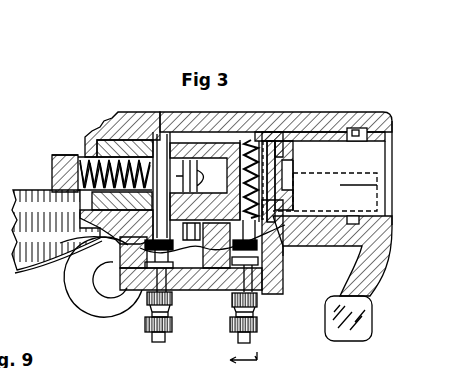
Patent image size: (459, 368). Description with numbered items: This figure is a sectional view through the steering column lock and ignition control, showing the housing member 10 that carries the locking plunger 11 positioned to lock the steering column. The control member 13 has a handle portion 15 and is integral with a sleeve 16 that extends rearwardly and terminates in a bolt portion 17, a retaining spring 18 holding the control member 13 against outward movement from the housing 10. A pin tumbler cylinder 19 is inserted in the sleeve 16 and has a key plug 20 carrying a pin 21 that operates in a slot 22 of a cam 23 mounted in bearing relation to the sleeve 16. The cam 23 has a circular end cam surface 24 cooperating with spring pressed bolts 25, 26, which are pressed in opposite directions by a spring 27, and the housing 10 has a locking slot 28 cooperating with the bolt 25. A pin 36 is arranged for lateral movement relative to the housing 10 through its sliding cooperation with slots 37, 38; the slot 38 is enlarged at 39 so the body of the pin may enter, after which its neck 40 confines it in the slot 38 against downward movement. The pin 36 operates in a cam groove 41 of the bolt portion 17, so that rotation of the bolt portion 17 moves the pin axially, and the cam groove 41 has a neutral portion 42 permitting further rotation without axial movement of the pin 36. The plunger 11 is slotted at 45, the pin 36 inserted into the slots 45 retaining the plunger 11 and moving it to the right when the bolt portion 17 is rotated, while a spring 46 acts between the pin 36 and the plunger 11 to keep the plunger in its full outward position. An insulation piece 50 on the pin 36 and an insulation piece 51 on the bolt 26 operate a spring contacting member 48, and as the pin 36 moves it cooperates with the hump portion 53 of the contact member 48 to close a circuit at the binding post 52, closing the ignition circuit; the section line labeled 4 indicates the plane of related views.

The housing member 10 is at (213, 178).
The locking plunger 11 is at (53, 156).
The control member 13 is at (382, 232).
The handle portion 15 is at (360, 312).
The sleeve 16 is at (315, 125).
The bolt portion 17 is at (104, 124).
The retaining spring 18 is at (355, 130).
The pin tumbler cylinder 19 is at (392, 170).
The key plug 20 is at (365, 175).
The pin 21 is at (300, 182).
The slot 22 is at (290, 150).
The cam 23 is at (275, 140).
The circular end cam surface 24 is at (283, 248).
The spring pressed bolt 25 is at (252, 134).
The spring pressed bolt 26 is at (283, 276).
The spring 27 is at (232, 275).
The locking slot 28 is at (265, 140).
The pin 36 is at (160, 131).
The slot 37 is at (186, 145).
The slot 38 is at (180, 250).
The enlarged portion 39 is at (198, 233).
The section line 4 is at (258, 100).
The neck 40 is at (117, 243).
The cam groove 41 is at (205, 165).
The neutral portion 42 is at (243, 136).
The slot 45 is at (80, 147).
The spring 46 is at (84, 157).
The spring contacting member 48 is at (150, 262).
The insulation piece 50 is at (110, 262).
The insulation piece 51 is at (268, 294).
The binding post 52 is at (146, 310).
The hump portion 53 is at (195, 267).